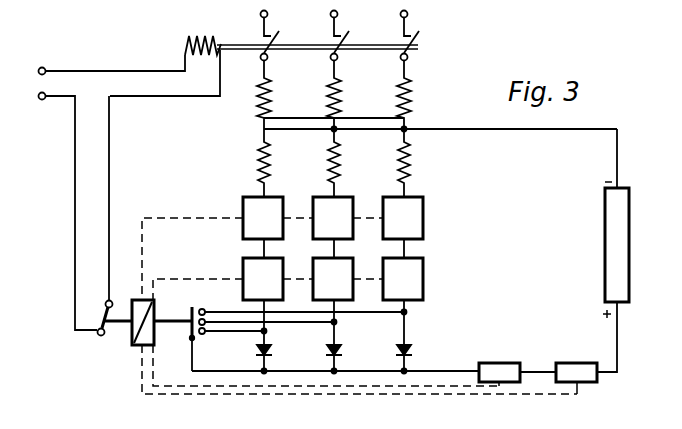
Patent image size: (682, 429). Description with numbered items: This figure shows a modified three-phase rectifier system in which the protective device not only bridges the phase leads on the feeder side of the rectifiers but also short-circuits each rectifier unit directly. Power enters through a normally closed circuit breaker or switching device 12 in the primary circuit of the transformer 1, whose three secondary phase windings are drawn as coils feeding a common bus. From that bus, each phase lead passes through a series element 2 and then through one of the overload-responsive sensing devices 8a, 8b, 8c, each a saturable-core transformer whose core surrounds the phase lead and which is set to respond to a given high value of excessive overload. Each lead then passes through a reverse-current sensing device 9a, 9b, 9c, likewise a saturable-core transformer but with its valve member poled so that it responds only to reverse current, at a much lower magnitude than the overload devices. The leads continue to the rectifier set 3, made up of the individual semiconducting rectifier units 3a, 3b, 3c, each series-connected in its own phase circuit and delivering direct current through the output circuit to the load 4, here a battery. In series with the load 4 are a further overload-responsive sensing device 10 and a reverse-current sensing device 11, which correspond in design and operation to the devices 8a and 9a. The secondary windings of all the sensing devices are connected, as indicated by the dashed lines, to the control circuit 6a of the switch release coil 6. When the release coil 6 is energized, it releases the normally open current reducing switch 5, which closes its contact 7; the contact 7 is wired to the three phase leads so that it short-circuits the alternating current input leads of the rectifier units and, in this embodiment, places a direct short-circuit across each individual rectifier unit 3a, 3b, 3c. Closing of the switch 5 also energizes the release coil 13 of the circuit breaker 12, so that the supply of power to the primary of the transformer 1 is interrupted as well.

The transformer 1 is at (246, 133).
The resistors 2 is at (344, 163).
The rectifier set 3 is at (330, 356).
The rectifier unit 3a is at (274, 357).
The rectifier unit 3b is at (346, 357).
The rectifier unit 3c is at (414, 357).
The load 4 is at (605, 223).
The current reducing switch 5 is at (180, 346).
The switch release coil 6 is at (132, 306).
The control circuit 6a is at (78, 332).
The contact 7 is at (301, 312).
The overload-responsive sensing device 8a is at (263, 218).
The overload-responsive sensing device 8b is at (333, 218).
The overload-responsive sensing device 8c is at (403, 218).
The reverse-current sensing device 9a is at (263, 279).
The reverse-current sensing device 9b is at (333, 279).
The reverse-current sensing device 9c is at (403, 279).
The overload-responsive sensing device 10 is at (499, 362).
The reverse-current sensing device 11 is at (576, 362).
The circuit breaker 12 is at (330, 36).
The release coil 13 is at (203, 36).